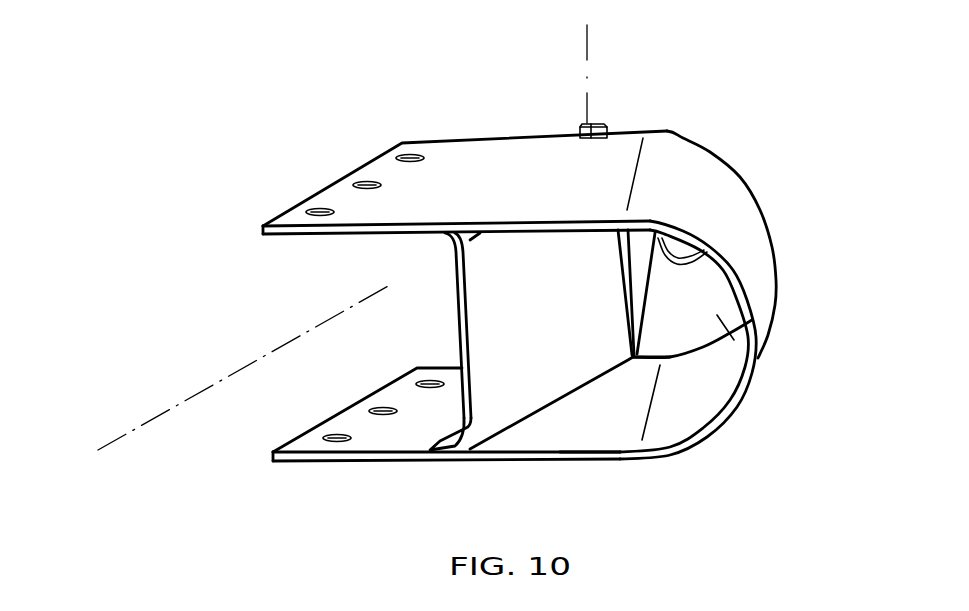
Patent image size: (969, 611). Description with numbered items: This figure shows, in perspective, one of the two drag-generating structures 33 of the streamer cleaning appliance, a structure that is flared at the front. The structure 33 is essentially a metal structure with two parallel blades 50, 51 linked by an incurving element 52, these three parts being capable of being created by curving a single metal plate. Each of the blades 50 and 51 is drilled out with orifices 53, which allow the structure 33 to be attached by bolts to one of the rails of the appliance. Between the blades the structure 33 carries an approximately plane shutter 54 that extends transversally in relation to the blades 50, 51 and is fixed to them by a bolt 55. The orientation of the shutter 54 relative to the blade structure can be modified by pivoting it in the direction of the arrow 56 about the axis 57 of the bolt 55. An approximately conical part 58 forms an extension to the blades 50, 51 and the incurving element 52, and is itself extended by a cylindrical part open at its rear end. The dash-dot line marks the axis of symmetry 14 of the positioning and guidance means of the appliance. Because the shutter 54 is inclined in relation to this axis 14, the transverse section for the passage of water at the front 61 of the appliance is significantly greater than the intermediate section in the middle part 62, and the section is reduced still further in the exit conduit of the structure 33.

The axis of symmetry 14 is at (133, 428).
The structure for the generation of drag 33 is at (262, 501).
The blade 50 is at (392, 438).
The blade 51 is at (475, 150).
The incurving element 52 is at (772, 276).
The orifices 53 is at (405, 154).
The shutter 54 is at (523, 283).
The bolt 55 is at (600, 123).
The arrow 56 is at (420, 306).
The axis of the bolt 57 is at (587, 42).
The conical part 58 is at (754, 342).
The front of the cleaning appliance 61 is at (590, 444).
The middle part 62 is at (676, 345).